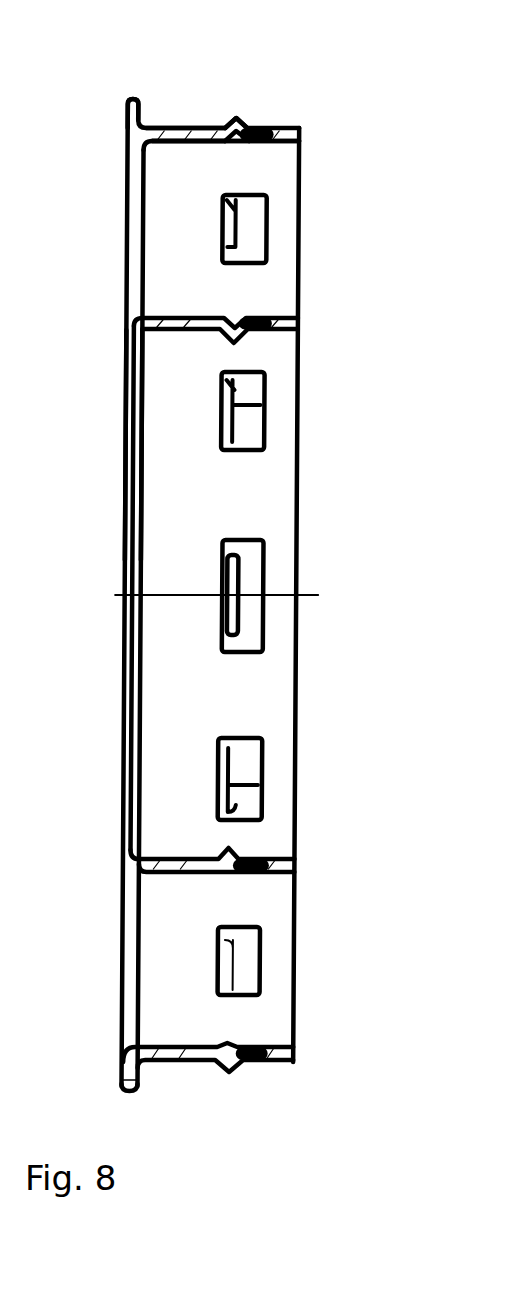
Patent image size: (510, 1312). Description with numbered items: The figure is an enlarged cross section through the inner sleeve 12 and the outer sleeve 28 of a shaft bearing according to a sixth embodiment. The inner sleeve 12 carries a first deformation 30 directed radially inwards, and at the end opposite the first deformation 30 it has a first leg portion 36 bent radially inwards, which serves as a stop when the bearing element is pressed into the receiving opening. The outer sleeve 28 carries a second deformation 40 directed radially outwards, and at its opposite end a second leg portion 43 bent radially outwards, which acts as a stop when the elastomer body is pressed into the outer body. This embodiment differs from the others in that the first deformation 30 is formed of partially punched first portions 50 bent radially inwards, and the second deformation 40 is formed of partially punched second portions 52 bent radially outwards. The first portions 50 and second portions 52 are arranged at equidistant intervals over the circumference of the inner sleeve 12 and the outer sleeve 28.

The inner sleeve 12 is at (184, 317).
The outer sleeve 28 is at (178, 130).
The first deformation 30 is at (239, 339).
The first leg portion 36 is at (128, 346).
The second deformation 40 is at (234, 123).
The second leg portion 43 is at (129, 103).
The first portions 50 is at (243, 318).
The second portions 52 is at (253, 137).